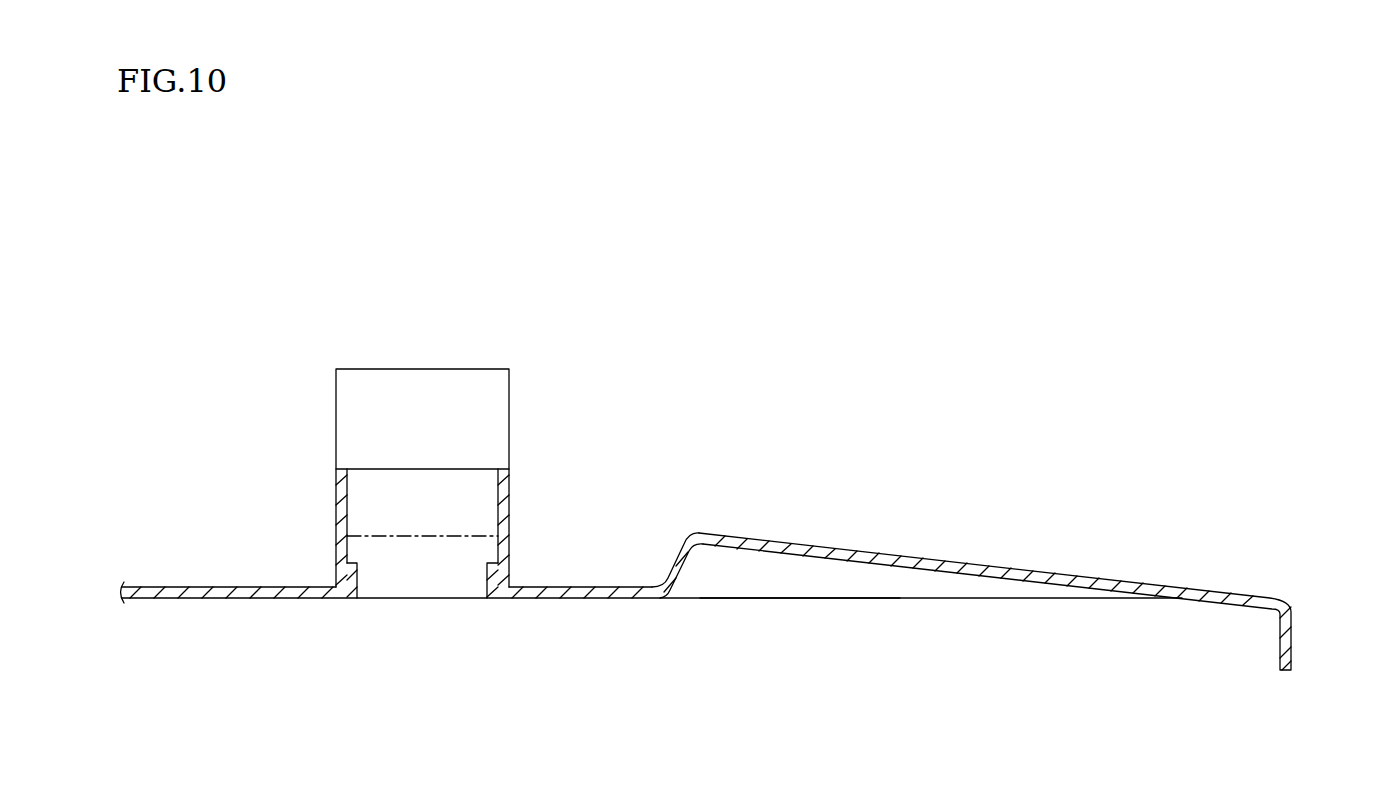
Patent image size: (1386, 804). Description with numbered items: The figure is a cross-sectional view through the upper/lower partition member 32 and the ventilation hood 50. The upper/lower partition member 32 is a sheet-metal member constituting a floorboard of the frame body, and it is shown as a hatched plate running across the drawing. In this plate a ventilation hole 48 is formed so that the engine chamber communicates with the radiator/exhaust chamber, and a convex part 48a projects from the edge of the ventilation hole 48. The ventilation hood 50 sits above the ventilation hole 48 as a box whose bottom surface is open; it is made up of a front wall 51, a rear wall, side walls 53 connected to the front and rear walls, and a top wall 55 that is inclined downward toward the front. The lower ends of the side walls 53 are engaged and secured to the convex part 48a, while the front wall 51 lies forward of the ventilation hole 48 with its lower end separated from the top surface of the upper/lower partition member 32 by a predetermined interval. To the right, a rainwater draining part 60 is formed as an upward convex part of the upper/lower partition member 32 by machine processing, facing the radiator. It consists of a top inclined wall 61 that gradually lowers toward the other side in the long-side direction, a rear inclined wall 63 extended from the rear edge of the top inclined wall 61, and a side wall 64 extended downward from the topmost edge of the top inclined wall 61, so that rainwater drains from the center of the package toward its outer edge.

The upper/lower partition member 32 is at (1287, 640).
The ventilation hole 48 is at (380, 588).
The convex part 48a is at (480, 588).
The ventilation hood 50 is at (522, 433).
The front wall 51 is at (422, 512).
The side walls 53 is at (336, 500).
The top wall 55 is at (423, 398).
The rainwater draining part 60 is at (1012, 569).
The top inclined wall 61 is at (867, 553).
The rear inclined wall 63 is at (744, 578).
The side wall 64 is at (668, 576).